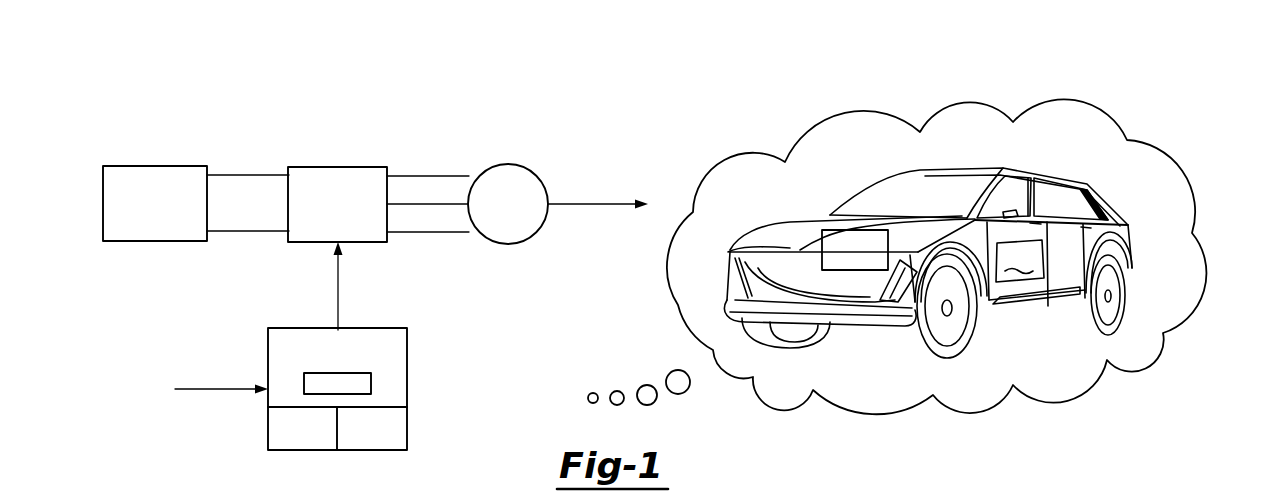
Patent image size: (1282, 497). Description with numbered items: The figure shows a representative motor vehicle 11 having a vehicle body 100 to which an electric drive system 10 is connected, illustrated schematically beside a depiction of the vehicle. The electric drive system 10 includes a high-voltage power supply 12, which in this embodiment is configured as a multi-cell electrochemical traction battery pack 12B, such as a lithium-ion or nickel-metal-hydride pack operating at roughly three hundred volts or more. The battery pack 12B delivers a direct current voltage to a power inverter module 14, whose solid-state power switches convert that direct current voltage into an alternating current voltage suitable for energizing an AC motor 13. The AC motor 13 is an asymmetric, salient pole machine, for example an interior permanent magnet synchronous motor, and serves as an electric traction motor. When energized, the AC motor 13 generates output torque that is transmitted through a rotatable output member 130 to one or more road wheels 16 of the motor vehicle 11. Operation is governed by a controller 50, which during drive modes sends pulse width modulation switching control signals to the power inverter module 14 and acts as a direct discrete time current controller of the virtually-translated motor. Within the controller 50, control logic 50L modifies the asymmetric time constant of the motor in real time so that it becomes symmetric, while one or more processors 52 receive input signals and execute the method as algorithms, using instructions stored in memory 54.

The electric drive system 10 is at (85, 88).
The motor vehicle 11 is at (958, 126).
The high-voltage power supply 12 is at (245, 106).
The traction battery pack 12B is at (156, 165).
The AC motor 13 is at (507, 164).
The power inverter module 14 is at (339, 165).
The road wheels 16 is at (768, 342).
The controller 50 is at (268, 355).
The control logic 50L is at (371, 383).
The processor 52 is at (268, 435).
The memory 54 is at (407, 435).
The vehicle body 100 is at (1192, 233).
The rotatable output member 130 is at (569, 206).